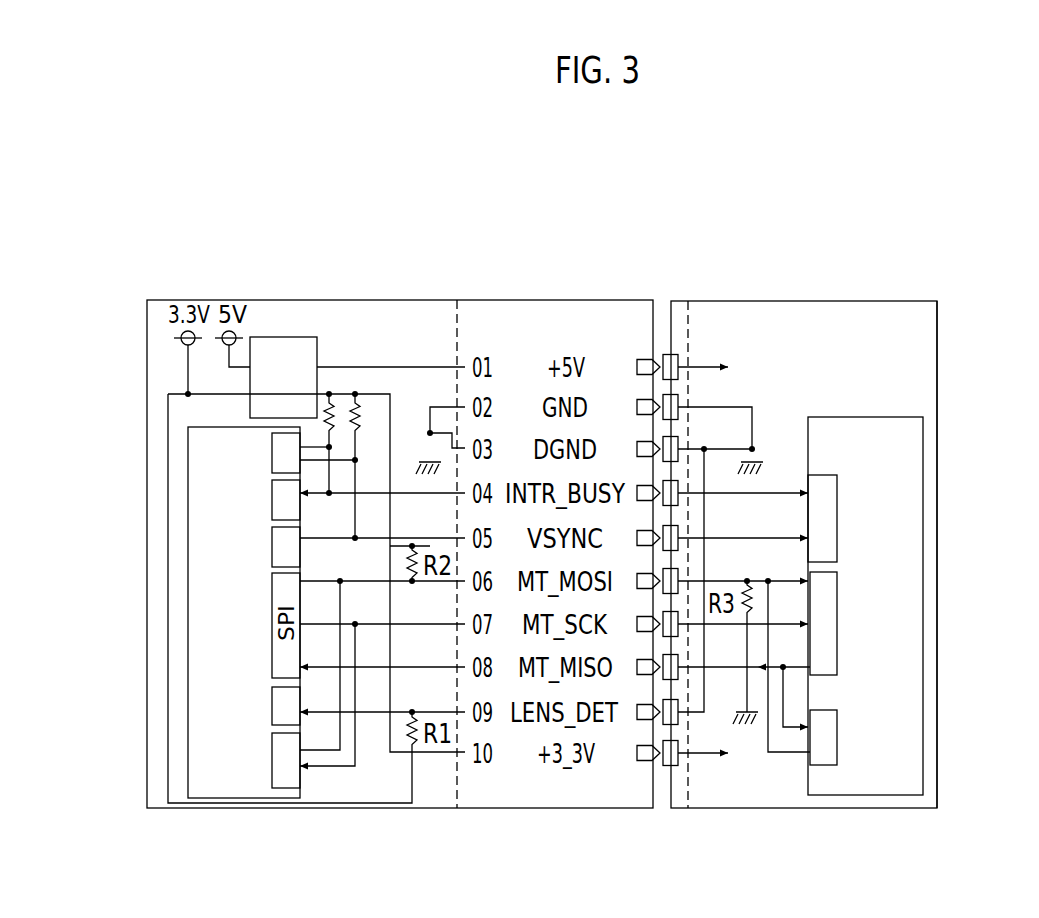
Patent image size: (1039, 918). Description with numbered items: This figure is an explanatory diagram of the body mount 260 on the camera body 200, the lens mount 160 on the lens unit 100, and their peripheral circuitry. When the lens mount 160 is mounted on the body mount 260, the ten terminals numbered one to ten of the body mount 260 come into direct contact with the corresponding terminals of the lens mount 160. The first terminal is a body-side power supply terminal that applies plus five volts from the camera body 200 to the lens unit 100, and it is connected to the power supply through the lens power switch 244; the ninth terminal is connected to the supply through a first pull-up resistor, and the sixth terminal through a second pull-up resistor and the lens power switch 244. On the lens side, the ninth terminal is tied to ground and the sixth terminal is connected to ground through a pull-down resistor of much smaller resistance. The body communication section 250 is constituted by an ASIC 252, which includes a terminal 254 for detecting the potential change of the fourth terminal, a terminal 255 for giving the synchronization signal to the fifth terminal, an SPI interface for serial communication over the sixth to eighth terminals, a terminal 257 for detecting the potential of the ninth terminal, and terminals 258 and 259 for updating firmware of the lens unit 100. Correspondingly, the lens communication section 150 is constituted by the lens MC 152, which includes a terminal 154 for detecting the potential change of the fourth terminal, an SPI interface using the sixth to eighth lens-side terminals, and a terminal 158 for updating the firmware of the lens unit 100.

The lens unit 100 is at (813, 260).
The lens communication section 150 is at (898, 325).
The lens MC 152 is at (912, 612).
The terminal 154 is at (837, 510).
The terminal 158 is at (837, 733).
The lens mount 160 is at (683, 323).
The camera body 200 is at (376, 260).
The lens power switch 244 is at (283, 337).
The body communication section 250 is at (160, 377).
The ASIC 252 is at (205, 604).
The terminal 254 is at (272, 498).
The terminal 255 is at (272, 543).
The terminal 257 is at (272, 703).
The terminal 258 is at (272, 751).
The terminal 259 is at (272, 452).
The body mount 260 is at (479, 322).